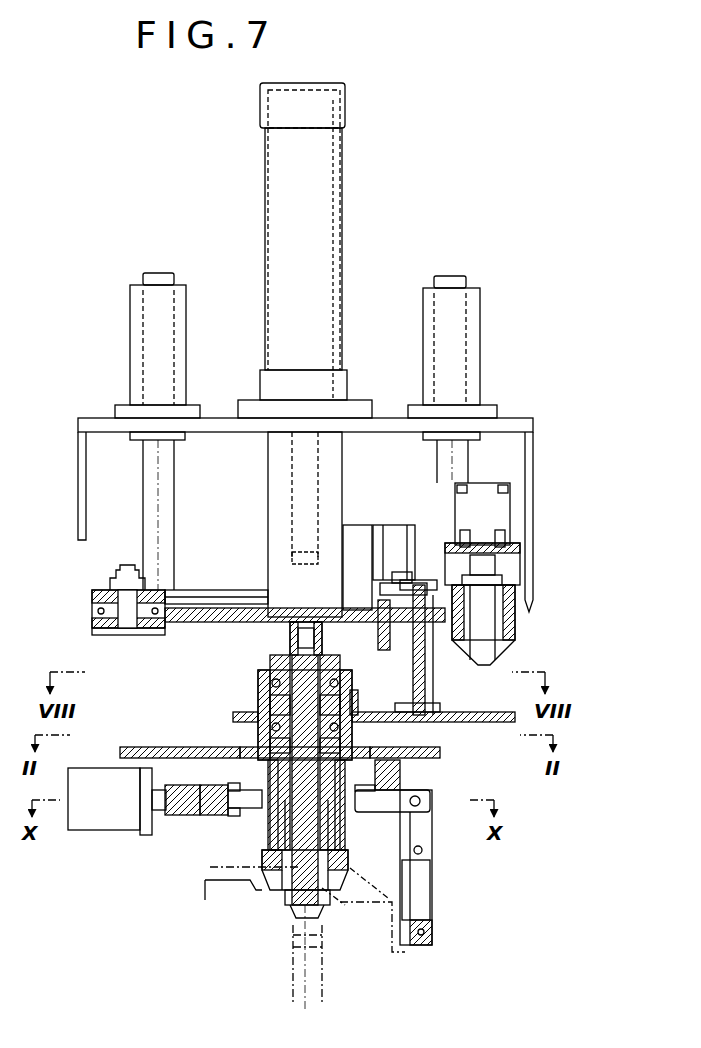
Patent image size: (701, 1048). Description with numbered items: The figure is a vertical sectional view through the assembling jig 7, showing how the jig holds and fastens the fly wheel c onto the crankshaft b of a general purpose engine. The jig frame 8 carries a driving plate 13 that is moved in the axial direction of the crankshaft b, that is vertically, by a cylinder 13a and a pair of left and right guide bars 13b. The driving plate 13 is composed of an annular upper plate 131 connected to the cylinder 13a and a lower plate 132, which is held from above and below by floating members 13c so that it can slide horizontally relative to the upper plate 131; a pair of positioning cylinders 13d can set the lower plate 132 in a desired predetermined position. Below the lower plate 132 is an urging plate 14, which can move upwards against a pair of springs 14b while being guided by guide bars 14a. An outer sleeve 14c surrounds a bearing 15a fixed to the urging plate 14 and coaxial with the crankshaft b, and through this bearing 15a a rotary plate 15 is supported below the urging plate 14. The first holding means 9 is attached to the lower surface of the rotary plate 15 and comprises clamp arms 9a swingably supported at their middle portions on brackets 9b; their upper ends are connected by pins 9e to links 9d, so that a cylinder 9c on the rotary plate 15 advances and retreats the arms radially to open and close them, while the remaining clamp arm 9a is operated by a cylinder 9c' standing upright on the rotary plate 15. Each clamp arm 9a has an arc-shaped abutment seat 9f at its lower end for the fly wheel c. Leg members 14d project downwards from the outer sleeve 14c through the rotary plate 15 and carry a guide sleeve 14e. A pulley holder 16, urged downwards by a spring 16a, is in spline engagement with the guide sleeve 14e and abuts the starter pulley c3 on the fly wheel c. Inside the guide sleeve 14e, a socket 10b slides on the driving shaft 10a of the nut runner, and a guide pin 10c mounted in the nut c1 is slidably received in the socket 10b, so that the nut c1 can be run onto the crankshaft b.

The assembling jig 7 is at (363, 214).
The cylinder 13a is at (338, 318).
The guide bars 13b is at (155, 505).
The jig frame 8 is at (533, 468).
The positioning cylinders 13d is at (503, 515).
The cylinder 9c' is at (385, 548).
The driving plate 13 is at (200, 580).
The upper plate 131 is at (205, 593).
The lower plate 132 is at (205, 625).
The floating members 13c is at (95, 592).
The urging plate 14 is at (495, 722).
The bearing 15a is at (268, 672).
The outer sleeve 14c is at (258, 688).
The leg members 14d is at (245, 748).
The springs 14b is at (428, 680).
The guide bars 14a is at (430, 712).
The driving shaft 10a is at (355, 748).
The rotary plate 15 is at (440, 755).
The pins 9e is at (430, 800).
The brackets 9b is at (432, 848).
The links 9d is at (420, 888).
The clamp arms 9a is at (432, 890).
The abutment seat 9f is at (420, 948).
The cylinder 9c is at (110, 822).
The first holding means 9 is at (177, 829).
The guide sleeve 14e is at (268, 840).
The spring 16a is at (245, 875).
The pulley holder 16 is at (240, 882).
The socket 10b is at (290, 878).
The guide pin 10c is at (302, 908).
The nut c1 is at (332, 905).
The starter pulley c3 is at (372, 880).
The fly wheel c is at (393, 952).
The crankshaft b is at (295, 965).